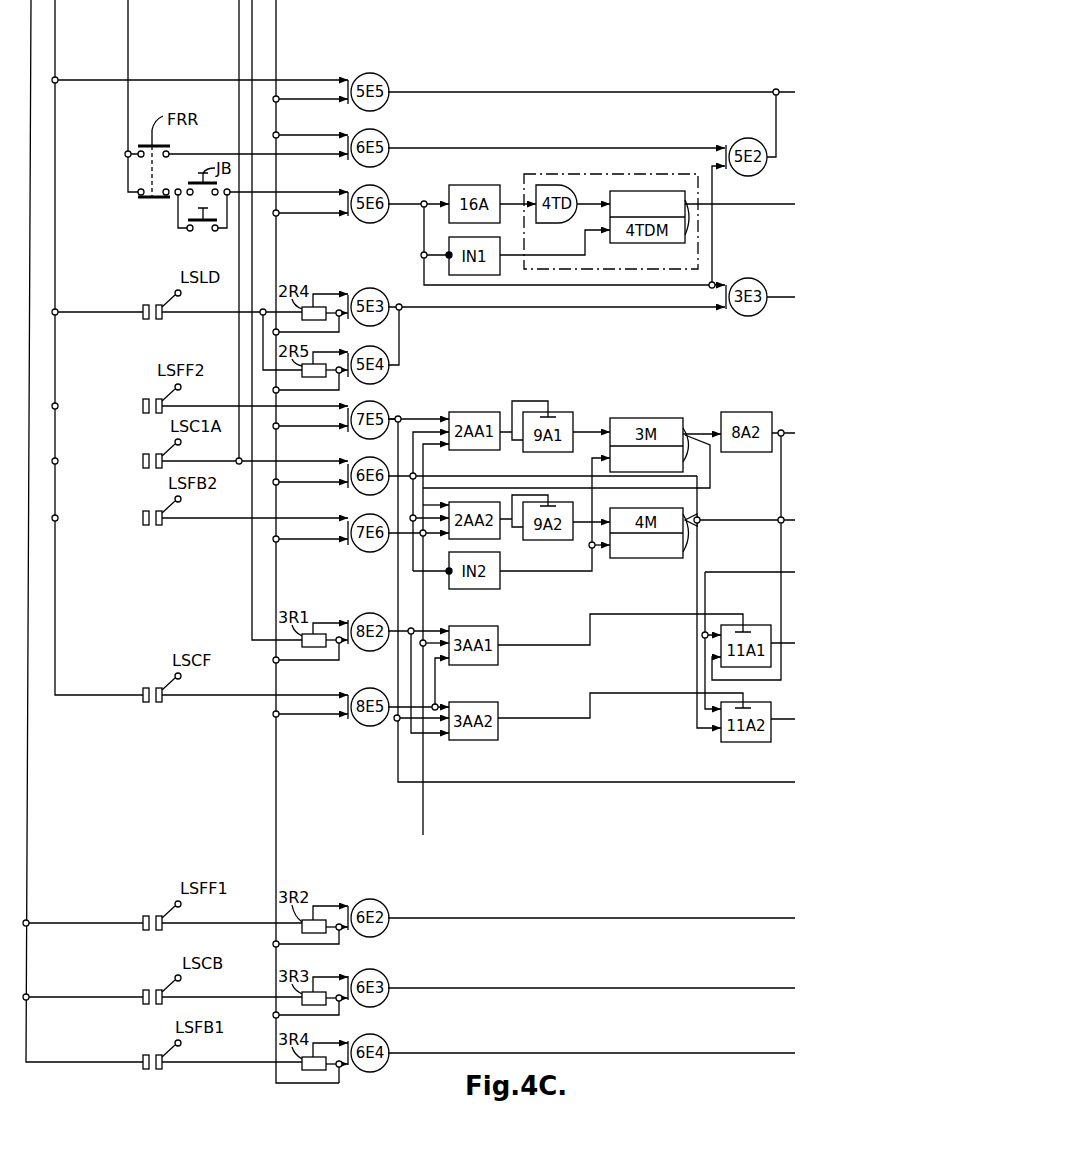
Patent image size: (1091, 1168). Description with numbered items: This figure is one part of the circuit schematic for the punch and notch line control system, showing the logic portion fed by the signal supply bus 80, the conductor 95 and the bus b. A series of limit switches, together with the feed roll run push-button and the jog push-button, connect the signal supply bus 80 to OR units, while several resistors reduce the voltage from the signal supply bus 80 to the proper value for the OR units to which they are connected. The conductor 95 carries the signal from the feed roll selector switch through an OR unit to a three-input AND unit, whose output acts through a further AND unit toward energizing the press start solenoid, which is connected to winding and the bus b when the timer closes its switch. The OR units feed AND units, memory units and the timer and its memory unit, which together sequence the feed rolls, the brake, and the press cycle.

The signal supply bus 80 is at (55, 62).
The conductor 95 is at (252, 72).
The bus b is at (276, 48).